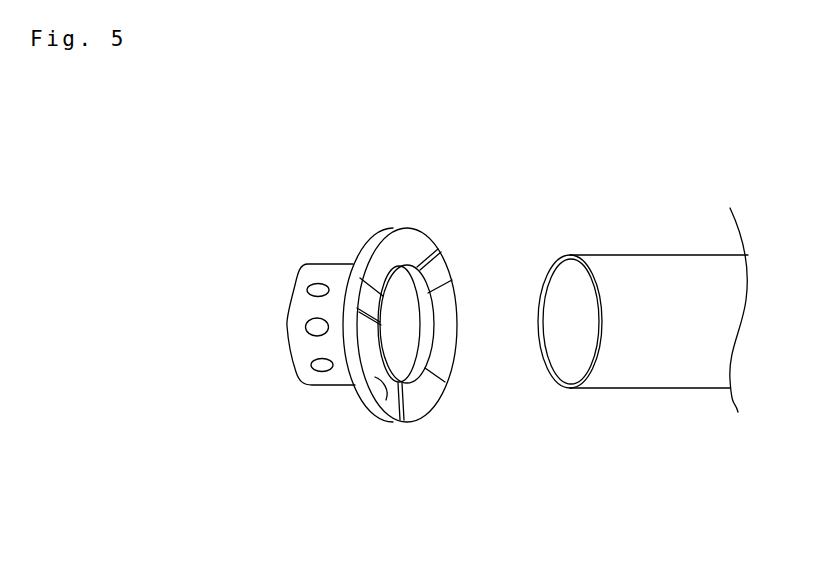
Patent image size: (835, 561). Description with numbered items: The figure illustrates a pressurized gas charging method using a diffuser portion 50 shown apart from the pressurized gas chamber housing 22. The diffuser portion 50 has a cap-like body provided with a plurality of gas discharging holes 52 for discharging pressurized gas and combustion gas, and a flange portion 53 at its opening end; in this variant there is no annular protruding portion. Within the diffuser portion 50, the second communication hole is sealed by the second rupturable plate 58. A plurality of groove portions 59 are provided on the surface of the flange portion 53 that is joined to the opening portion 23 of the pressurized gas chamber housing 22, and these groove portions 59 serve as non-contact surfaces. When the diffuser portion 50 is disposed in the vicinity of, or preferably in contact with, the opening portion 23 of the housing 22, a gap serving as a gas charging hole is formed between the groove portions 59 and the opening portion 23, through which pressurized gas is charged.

The pressurized gas chamber housing 22 is at (668, 280).
The opening portion 23 is at (572, 343).
The diffuser portion 50 is at (283, 358).
The gas discharging holes 52 is at (318, 290).
The flange portion 53 is at (404, 240).
The second rupturable plate 58 is at (400, 333).
The groove portions 59 is at (386, 400).